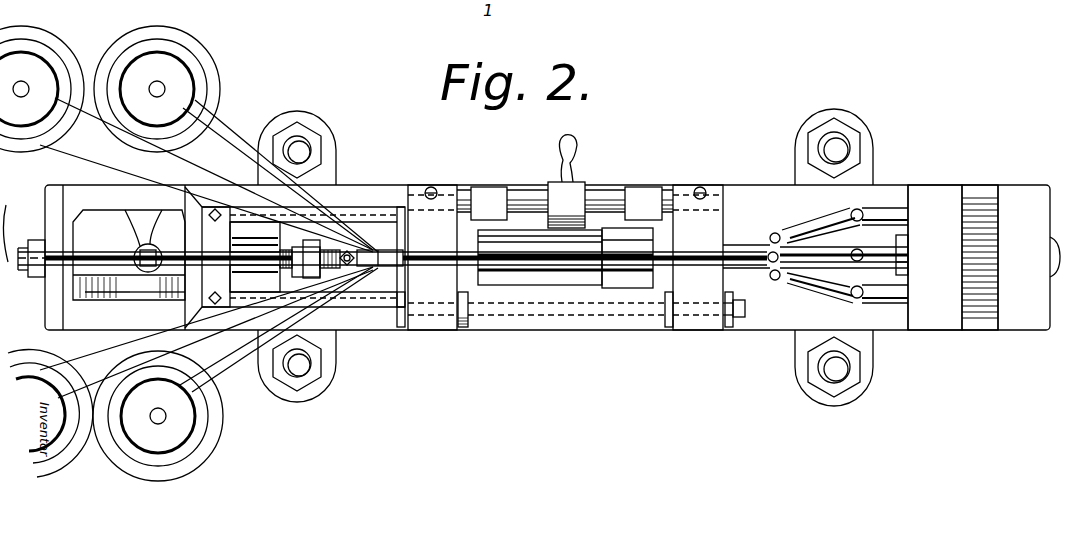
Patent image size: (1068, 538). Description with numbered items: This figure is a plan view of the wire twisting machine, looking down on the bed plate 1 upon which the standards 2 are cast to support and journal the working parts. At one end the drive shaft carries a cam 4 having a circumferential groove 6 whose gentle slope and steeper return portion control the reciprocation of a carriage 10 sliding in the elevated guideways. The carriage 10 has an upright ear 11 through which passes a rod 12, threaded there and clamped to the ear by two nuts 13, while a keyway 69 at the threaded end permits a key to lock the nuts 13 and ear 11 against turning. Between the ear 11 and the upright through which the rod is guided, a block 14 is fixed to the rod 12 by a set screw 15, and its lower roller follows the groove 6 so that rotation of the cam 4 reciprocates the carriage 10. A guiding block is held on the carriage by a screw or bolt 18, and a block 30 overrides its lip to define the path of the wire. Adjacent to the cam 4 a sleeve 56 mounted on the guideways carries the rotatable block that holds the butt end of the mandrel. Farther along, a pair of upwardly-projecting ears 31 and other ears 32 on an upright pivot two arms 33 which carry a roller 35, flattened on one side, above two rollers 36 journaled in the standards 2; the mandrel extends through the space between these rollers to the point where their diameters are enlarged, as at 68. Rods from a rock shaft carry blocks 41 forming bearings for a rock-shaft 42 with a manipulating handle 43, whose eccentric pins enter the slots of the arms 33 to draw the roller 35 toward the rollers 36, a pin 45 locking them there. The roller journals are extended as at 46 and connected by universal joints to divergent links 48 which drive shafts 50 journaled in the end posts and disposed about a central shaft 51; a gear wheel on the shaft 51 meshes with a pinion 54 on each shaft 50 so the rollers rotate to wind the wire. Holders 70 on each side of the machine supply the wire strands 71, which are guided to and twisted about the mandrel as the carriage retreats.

The bed plate 1 is at (771, 238).
The standards 2 is at (56, 196).
The cam 4 is at (103, 223).
The circumferential groove 6 is at (136, 243).
The carriage 10 is at (387, 280).
The upright ear 11 is at (318, 238).
The rod 12 is at (100, 265).
The nuts 13 is at (332, 251).
The block 14 is at (147, 268).
The set screw 15 is at (177, 264).
The screw or bolt 18 is at (346, 268).
The block 30 is at (390, 260).
The upwardly-projecting ears 31 is at (452, 328).
The ears 32 is at (729, 328).
The arms 33 is at (565, 257).
The roller 35 is at (540, 258).
The rollers 36 is at (517, 232).
The block 41 is at (652, 182).
The rock-shaft 42 is at (599, 191).
The manipulating handle 43 is at (574, 155).
The pin 45 is at (436, 190).
The journal extensions 46 is at (746, 266).
The links 48 is at (806, 283).
The shafts 50 is at (892, 250).
The shaft 51 is at (897, 277).
The pinion 54 is at (990, 254).
The sleeve 56 is at (226, 248).
The enlarged diameter 68 is at (608, 290).
The keyway 69 is at (255, 278).
The holders 70 is at (128, 62).
The wire strands 71 is at (227, 142).